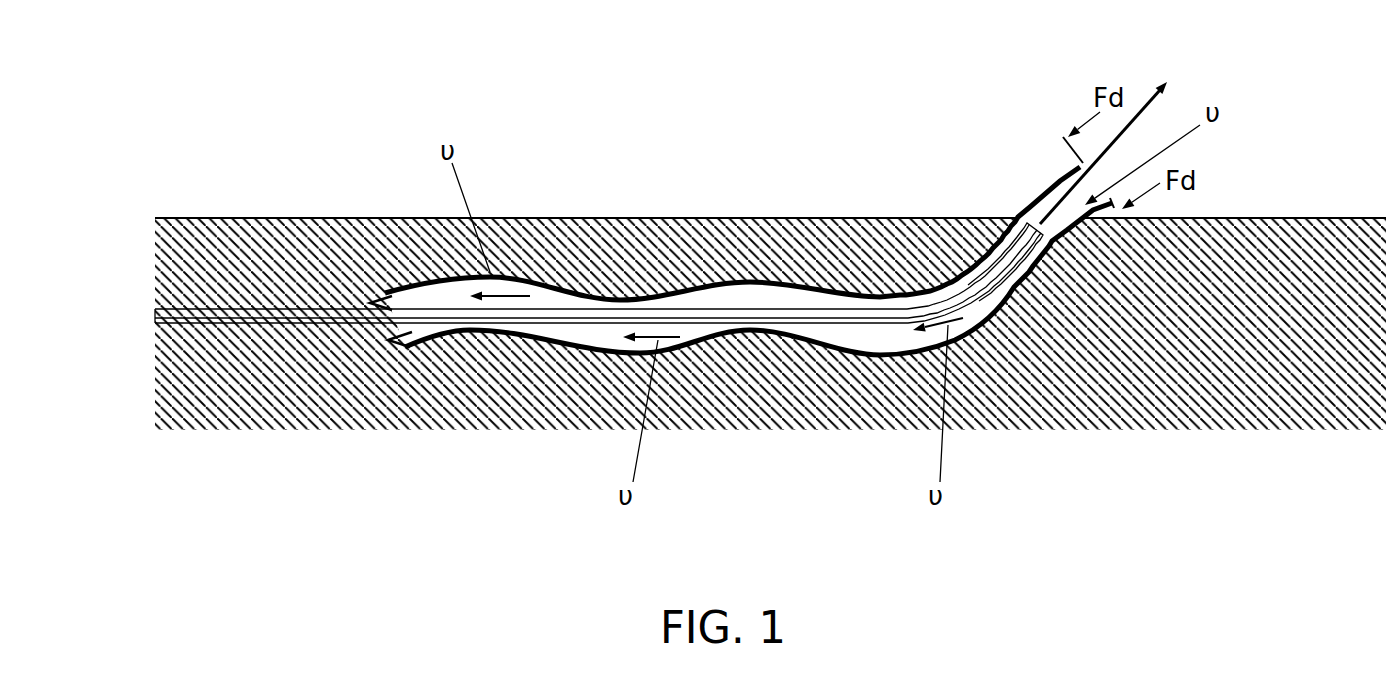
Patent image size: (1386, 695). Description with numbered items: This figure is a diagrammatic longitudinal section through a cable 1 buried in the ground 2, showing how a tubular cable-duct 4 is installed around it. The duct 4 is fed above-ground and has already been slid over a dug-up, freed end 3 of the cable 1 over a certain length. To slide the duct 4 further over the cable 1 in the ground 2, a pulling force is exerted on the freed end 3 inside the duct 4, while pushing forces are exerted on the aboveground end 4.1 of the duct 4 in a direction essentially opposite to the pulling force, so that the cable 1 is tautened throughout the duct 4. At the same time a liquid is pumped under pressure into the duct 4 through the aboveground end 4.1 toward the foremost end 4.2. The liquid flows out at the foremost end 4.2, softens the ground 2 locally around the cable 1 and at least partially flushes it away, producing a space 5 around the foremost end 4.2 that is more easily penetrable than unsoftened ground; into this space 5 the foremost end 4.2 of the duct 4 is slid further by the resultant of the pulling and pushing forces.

The cable 1 is at (153, 318).
The ground 2 is at (275, 405).
The freed end 3 is at (1010, 222).
The tubular cable-duct 4 is at (756, 283).
The aboveground end 4.1 is at (1050, 178).
The foremost end 4.2 is at (568, 292).
The space 5 is at (367, 302).